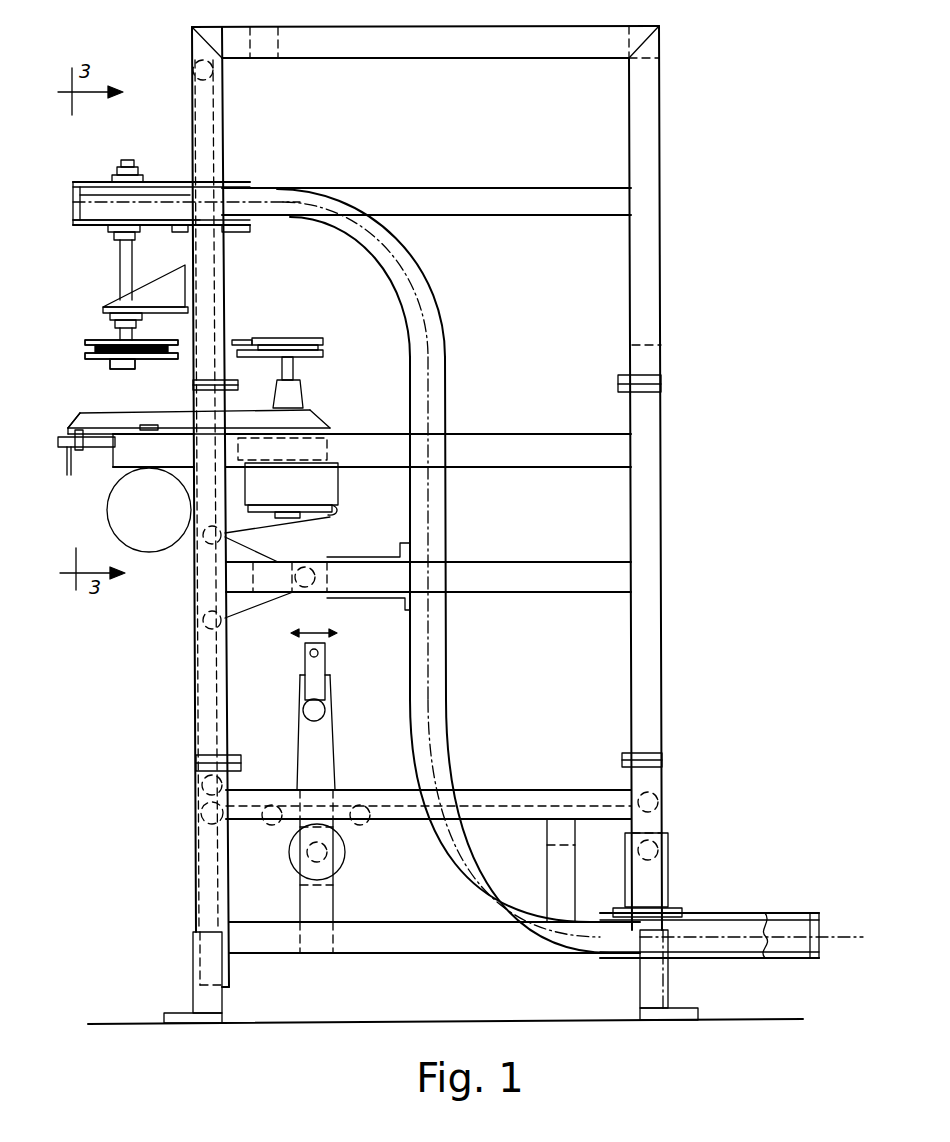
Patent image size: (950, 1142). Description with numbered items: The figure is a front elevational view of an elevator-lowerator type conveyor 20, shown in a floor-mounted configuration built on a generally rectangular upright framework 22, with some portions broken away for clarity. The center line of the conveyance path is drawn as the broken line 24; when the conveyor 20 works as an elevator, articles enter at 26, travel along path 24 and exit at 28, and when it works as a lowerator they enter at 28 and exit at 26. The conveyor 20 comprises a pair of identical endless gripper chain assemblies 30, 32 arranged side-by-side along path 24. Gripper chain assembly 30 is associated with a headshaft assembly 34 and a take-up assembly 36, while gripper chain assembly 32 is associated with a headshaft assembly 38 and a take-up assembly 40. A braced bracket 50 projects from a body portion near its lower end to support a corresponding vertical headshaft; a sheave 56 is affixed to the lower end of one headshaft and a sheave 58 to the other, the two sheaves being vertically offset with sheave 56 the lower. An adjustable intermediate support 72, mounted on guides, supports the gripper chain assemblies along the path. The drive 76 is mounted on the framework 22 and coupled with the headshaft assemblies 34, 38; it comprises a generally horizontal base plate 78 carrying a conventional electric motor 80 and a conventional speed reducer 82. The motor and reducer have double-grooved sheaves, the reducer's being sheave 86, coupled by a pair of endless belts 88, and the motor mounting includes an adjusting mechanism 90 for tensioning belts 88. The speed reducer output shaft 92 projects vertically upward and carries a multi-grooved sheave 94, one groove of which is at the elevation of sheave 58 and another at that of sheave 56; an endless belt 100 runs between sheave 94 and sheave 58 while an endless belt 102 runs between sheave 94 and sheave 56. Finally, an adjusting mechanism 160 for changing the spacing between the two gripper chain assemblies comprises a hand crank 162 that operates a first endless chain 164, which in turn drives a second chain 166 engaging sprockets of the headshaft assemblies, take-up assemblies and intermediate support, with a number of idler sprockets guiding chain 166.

The elevator-lowerator type conveyor 20 is at (668, 645).
The upright framework 22 is at (645, 131).
The conveyance path center line 24 is at (412, 292).
The article entry/exit point 26 is at (868, 925).
The article exit/entry point 28 is at (56, 195).
The endless gripper chain assembly 30 is at (88, 218).
The endless gripper chain assembly 32 is at (107, 214).
The headshaft assembly 34 is at (85, 192).
The take-up assembly 36 is at (800, 912).
The headshaft assembly 38 is at (152, 232).
The take-up assembly 40 is at (750, 960).
The braced bracket 50 is at (165, 297).
The sheave 56 is at (98, 361).
The sheave 58 is at (85, 346).
The intermediate support 72 is at (387, 598).
The drive 76 is at (338, 419).
The base plate 78 is at (78, 425).
The electric motor 80 is at (155, 537).
The speed reducer 82 is at (328, 474).
The double-grooved sheave 86 is at (330, 512).
The endless belts 88 is at (257, 521).
The adjusting mechanism 90 is at (100, 448).
The output shaft 92 is at (295, 370).
The multi-grooved sheave 94 is at (325, 346).
The endless belt 100 is at (93, 340).
The endless belt 102 is at (172, 359).
The adjusting mechanism 160 is at (350, 726).
The hand crank 162 is at (327, 662).
The first endless chain 164 is at (297, 777).
The second chain 166 is at (192, 92).